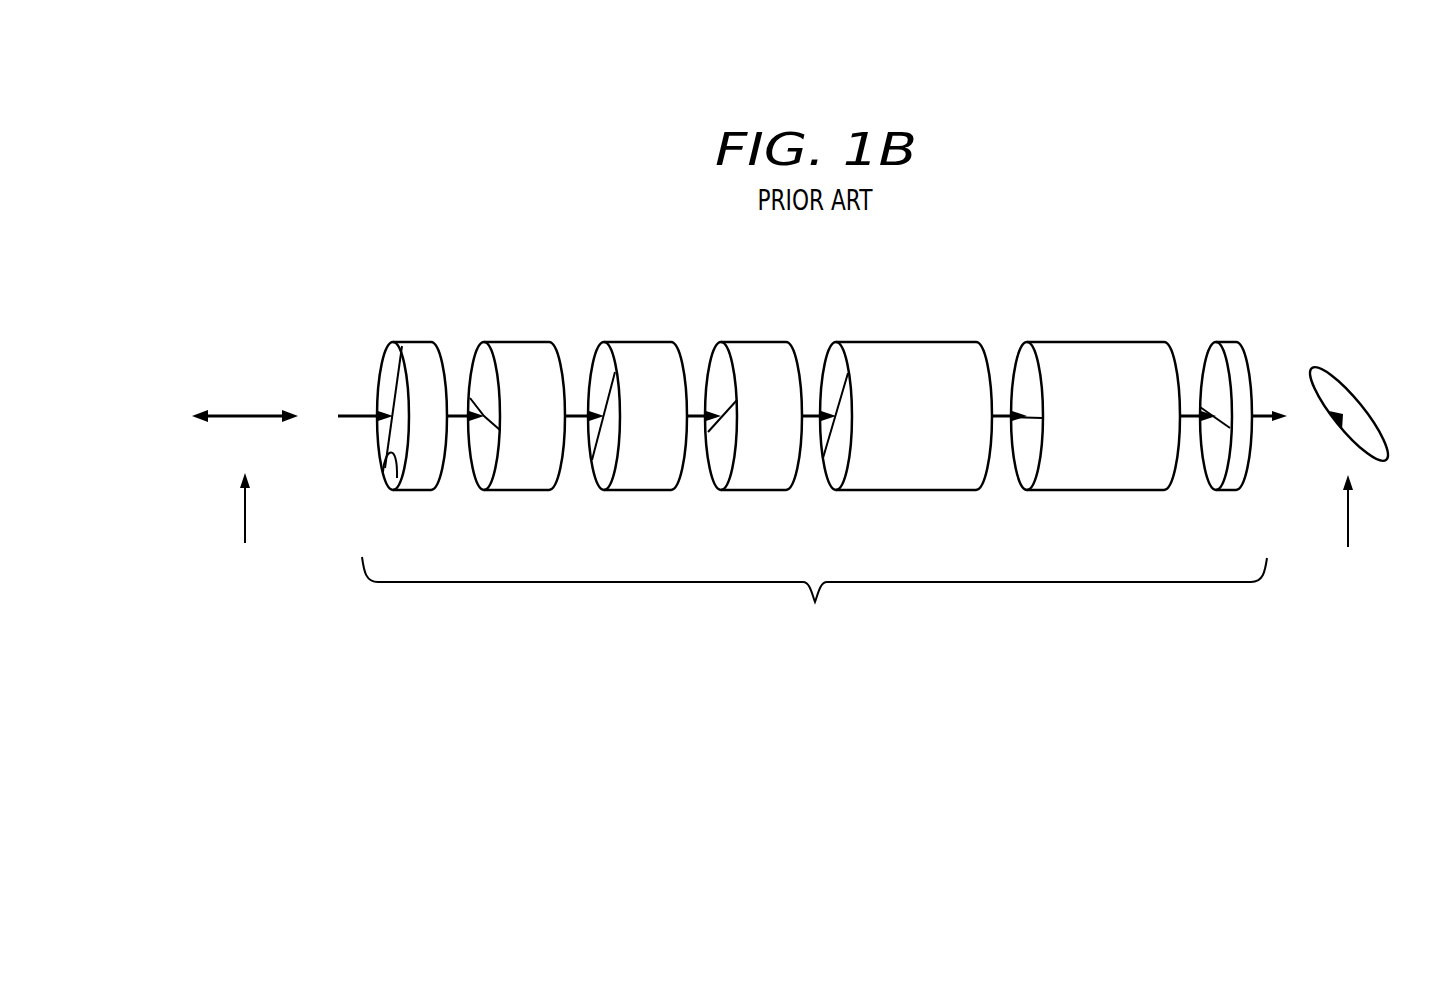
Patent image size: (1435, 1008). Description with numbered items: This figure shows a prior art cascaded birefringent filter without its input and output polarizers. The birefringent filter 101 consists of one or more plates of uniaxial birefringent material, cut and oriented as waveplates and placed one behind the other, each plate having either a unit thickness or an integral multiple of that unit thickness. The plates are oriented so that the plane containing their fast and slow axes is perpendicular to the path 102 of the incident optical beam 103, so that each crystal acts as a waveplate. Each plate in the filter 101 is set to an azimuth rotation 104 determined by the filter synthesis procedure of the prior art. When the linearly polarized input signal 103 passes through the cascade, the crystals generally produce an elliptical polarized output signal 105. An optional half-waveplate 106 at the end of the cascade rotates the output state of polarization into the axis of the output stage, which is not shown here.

The birefringent filter 101 is at (803, 468).
The path of the incident optical beam 102 is at (350, 414).
The incident optical beam 103 is at (245, 552).
The azimuth rotation 104 is at (388, 479).
The elliptical polarized output signal 105 is at (1348, 527).
The half-waveplate 106 is at (1237, 482).